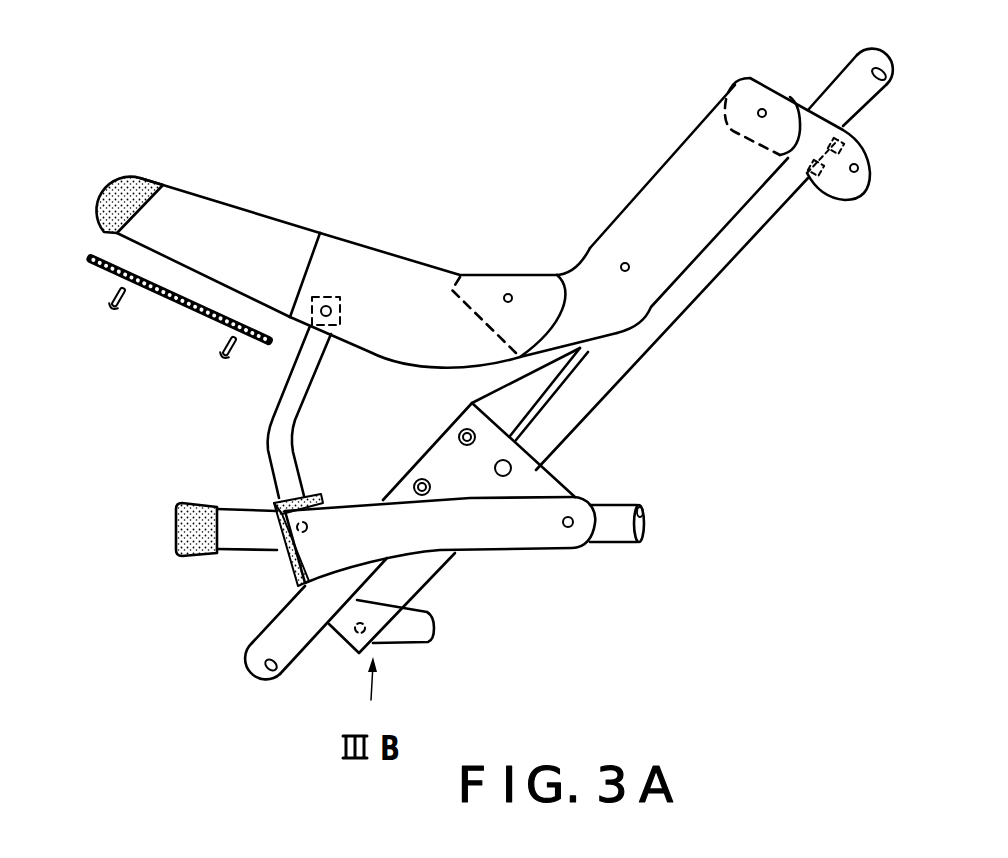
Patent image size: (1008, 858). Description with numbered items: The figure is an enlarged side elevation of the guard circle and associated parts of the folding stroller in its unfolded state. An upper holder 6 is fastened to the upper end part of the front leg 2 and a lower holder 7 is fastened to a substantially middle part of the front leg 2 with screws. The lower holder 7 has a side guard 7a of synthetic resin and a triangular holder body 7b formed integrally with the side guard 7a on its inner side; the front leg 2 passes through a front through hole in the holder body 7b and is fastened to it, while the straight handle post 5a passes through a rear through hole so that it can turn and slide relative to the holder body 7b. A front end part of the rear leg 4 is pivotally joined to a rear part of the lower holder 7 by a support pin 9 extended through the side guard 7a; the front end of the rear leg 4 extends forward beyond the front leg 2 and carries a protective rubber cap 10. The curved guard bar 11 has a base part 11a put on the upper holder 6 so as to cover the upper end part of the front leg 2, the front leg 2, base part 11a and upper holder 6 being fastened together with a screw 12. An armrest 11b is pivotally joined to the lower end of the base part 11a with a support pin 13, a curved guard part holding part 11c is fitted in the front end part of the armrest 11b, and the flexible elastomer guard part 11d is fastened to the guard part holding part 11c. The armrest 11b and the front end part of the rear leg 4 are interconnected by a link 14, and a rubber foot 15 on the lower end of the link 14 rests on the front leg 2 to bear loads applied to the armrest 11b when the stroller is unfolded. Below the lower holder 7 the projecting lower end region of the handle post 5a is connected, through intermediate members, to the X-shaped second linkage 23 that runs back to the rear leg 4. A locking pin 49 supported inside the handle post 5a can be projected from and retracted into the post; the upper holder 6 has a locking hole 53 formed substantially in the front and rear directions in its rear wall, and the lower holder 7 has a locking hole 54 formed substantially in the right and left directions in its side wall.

The front leg 2 is at (300, 638).
The rear leg 4 is at (615, 532).
The straight handle post 5a is at (641, 352).
The upper holder 6 is at (798, 95).
The lower holder 7 is at (440, 499).
The side guard 7a is at (468, 542).
The triangular holder body 7b is at (414, 481).
The support pin 9 is at (569, 527).
The protective rubber cap 10 is at (187, 532).
The curved guard bar 11 is at (448, 224).
The base part 11a is at (616, 221).
The armrest 11b is at (410, 255).
The guard part holding part 11c is at (242, 216).
The guard part 11d is at (146, 176).
The screw 12 is at (621, 264).
The support pin 13 is at (510, 294).
The link 14 is at (270, 422).
The rubber foot 15 is at (298, 580).
The X-shaped second linkage 23 is at (411, 644).
The locking pin 49 is at (815, 193).
The locking hole 53 is at (856, 174).
The locking hole 54 is at (512, 468).